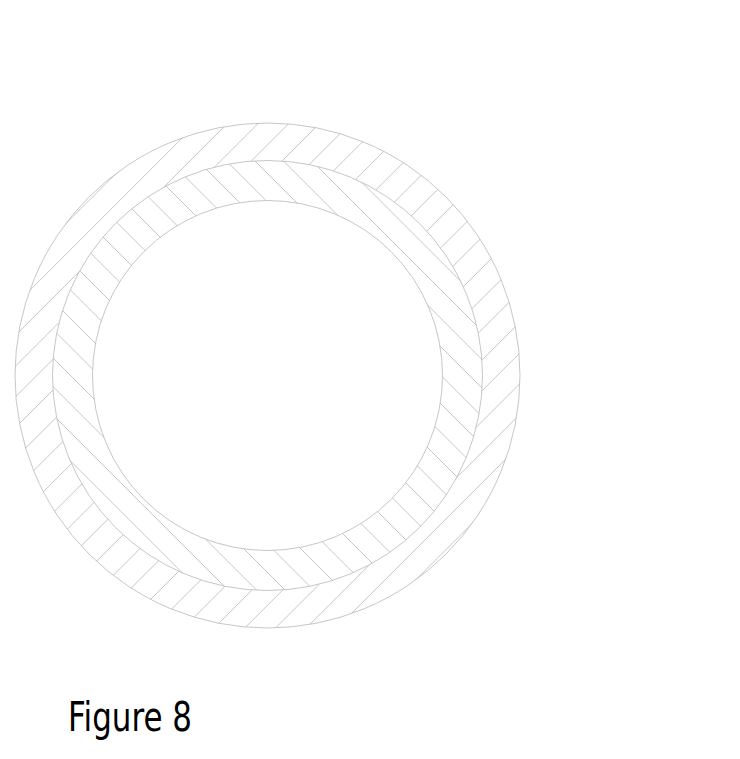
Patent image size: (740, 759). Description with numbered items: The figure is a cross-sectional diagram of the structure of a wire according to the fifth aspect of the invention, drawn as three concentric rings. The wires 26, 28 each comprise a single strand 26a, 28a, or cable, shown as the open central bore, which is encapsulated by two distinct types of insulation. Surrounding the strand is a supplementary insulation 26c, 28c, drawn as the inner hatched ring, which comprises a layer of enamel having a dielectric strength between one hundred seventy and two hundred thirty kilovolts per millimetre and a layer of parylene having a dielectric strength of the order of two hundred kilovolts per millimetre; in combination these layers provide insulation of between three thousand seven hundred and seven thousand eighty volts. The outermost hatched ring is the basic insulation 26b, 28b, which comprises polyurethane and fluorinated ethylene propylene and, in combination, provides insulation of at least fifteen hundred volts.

The wire 26 is at (370, 359).
The wire 28 is at (110, 153).
The single strand 26a is at (358, 453).
The single strand 28a is at (308, 425).
The basic insulation 26b is at (370, 376).
The basic insulation 28b is at (403, 195).
The supplementary insulation 26c is at (370, 376).
The supplementary insulation 28c is at (467, 345).